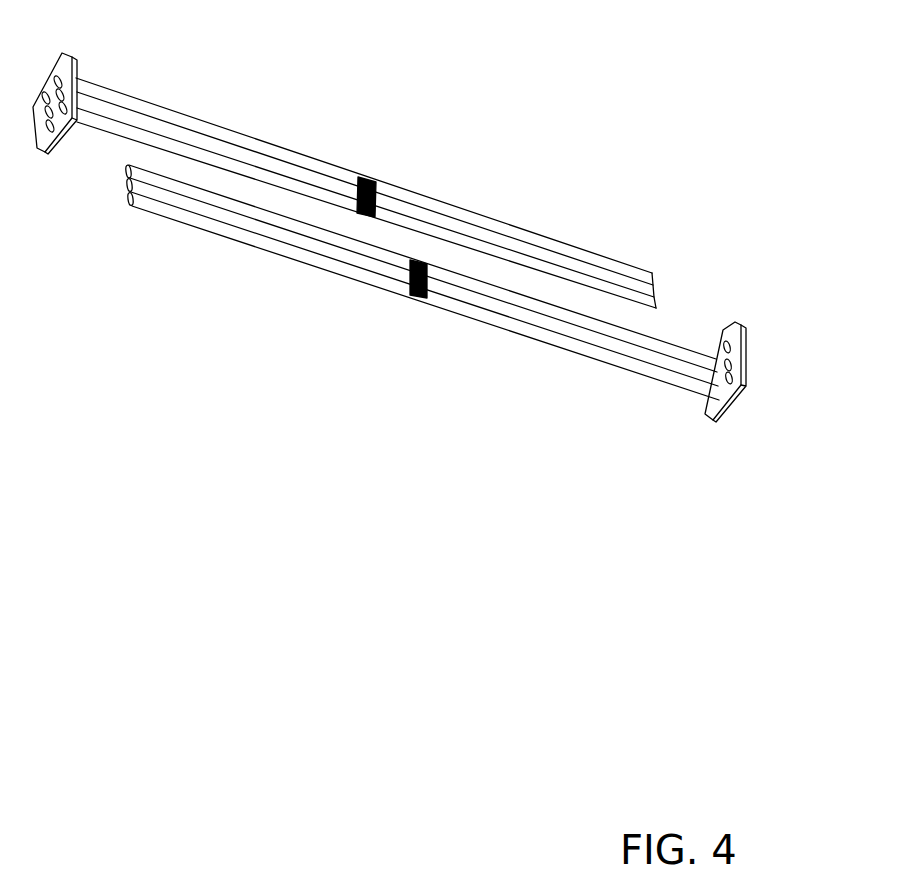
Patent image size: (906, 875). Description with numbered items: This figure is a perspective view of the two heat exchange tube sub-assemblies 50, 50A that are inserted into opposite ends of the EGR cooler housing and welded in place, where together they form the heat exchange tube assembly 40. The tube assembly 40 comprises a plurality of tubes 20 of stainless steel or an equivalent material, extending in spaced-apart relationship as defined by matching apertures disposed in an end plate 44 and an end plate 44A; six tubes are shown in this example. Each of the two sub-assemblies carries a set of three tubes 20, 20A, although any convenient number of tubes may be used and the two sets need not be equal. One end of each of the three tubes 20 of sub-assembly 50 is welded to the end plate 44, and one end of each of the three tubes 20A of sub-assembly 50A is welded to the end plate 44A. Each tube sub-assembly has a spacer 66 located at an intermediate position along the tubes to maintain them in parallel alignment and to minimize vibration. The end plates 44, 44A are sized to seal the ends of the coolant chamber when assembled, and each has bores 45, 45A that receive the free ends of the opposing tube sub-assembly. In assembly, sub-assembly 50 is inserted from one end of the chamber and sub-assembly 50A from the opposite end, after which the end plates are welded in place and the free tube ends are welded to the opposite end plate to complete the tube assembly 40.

The heat exchange tube assembly 40 is at (734, 433).
The tube sub-assembly 50 is at (313, 150).
The tube sub-assembly 50A is at (677, 341).
The end plate 44 is at (67, 68).
The end plate 44A is at (721, 329).
The bores 45 is at (64, 114).
The bores 45A is at (731, 362).
The tubes 20 is at (472, 217).
The tubes 20A is at (163, 211).
The spacer 66 is at (374, 177).